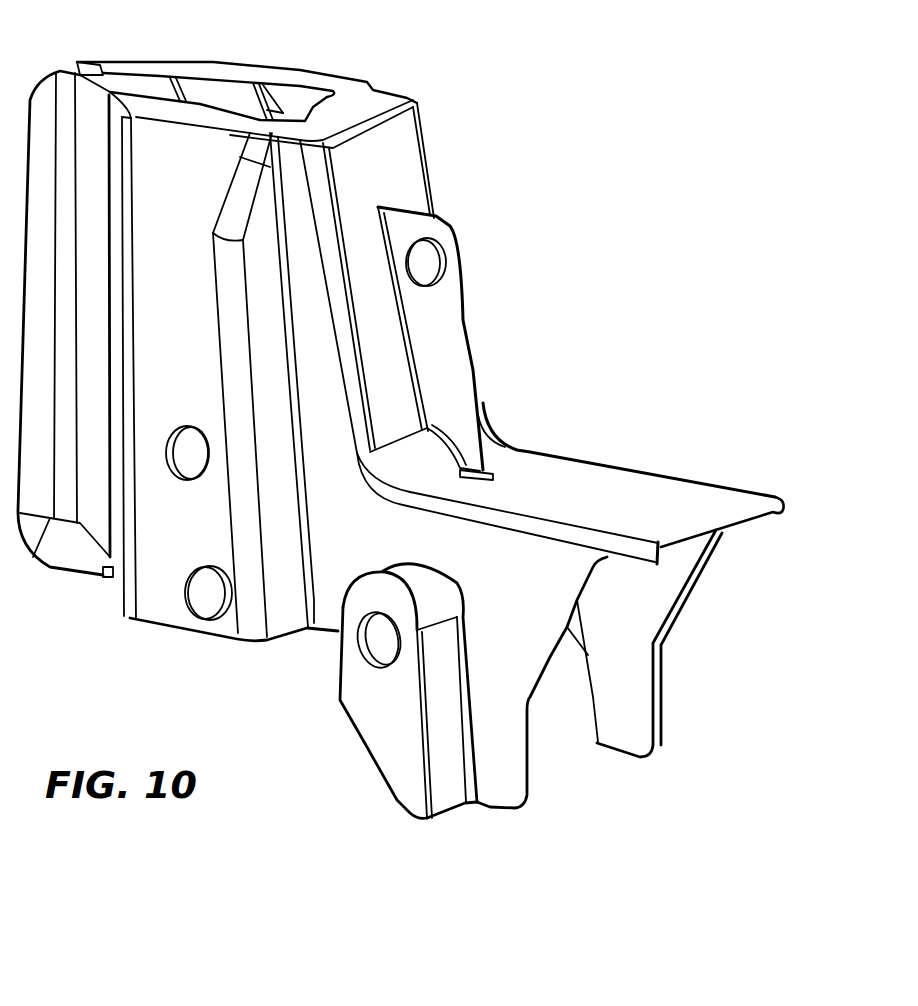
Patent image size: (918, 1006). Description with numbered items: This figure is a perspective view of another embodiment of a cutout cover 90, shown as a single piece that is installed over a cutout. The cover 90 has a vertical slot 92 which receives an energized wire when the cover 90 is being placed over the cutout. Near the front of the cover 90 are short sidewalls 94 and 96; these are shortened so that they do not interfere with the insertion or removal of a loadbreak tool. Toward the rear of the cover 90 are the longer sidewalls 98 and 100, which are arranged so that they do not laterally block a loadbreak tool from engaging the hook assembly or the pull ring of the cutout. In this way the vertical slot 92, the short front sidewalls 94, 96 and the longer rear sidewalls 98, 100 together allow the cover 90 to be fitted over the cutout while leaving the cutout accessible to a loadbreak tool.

The cutout cover 90 is at (590, 121).
The vertical slot 92 is at (137, 63).
The short sidewall 94 is at (645, 566).
The short sidewall 96 is at (770, 518).
The longer sidewall 98 is at (502, 777).
The longer sidewall 100 is at (627, 727).